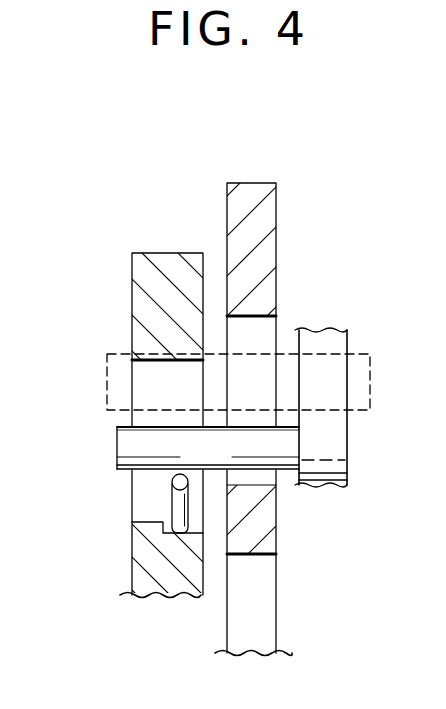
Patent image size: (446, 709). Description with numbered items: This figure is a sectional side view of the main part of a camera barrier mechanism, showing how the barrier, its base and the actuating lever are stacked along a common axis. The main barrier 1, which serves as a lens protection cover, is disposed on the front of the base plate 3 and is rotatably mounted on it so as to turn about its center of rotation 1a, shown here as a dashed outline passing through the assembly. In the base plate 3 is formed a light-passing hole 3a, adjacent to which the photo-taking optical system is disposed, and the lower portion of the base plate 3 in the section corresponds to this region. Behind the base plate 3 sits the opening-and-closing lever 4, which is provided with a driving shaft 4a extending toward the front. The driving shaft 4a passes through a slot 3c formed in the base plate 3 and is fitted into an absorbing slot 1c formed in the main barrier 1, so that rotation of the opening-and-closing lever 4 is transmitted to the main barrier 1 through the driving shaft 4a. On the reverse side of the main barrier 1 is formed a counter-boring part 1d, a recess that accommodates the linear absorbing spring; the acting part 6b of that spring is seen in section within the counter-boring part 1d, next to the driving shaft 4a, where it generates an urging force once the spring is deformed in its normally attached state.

The main barrier 1 is at (165, 253).
The center of rotation 1a is at (107, 386).
The absorbing slot 1c is at (163, 362).
The counter-boring part 1d is at (173, 518).
The base plate 3 is at (257, 192).
The light-passing hole 3a is at (267, 603).
The slot 3c is at (260, 336).
The opening-and-closing lever 4 is at (331, 448).
The driving shaft 4a is at (136, 445).
The acting part 6b is at (172, 481).